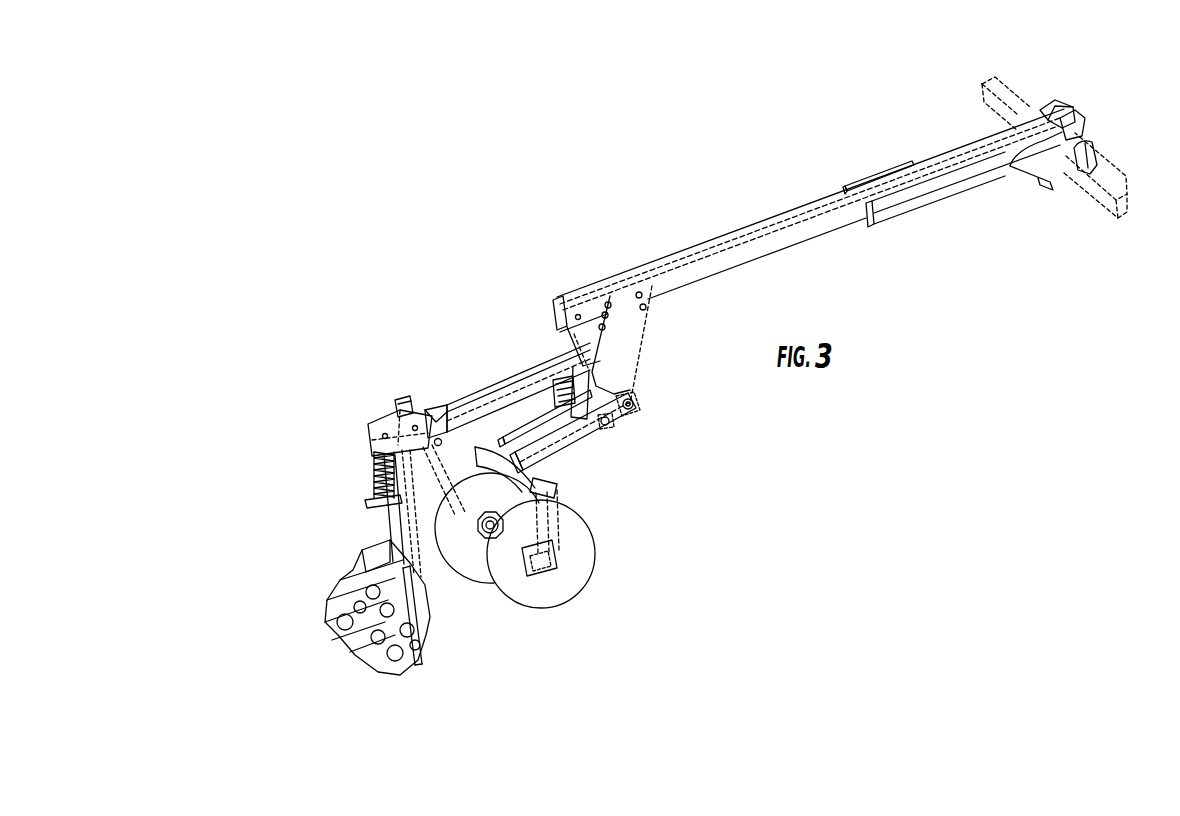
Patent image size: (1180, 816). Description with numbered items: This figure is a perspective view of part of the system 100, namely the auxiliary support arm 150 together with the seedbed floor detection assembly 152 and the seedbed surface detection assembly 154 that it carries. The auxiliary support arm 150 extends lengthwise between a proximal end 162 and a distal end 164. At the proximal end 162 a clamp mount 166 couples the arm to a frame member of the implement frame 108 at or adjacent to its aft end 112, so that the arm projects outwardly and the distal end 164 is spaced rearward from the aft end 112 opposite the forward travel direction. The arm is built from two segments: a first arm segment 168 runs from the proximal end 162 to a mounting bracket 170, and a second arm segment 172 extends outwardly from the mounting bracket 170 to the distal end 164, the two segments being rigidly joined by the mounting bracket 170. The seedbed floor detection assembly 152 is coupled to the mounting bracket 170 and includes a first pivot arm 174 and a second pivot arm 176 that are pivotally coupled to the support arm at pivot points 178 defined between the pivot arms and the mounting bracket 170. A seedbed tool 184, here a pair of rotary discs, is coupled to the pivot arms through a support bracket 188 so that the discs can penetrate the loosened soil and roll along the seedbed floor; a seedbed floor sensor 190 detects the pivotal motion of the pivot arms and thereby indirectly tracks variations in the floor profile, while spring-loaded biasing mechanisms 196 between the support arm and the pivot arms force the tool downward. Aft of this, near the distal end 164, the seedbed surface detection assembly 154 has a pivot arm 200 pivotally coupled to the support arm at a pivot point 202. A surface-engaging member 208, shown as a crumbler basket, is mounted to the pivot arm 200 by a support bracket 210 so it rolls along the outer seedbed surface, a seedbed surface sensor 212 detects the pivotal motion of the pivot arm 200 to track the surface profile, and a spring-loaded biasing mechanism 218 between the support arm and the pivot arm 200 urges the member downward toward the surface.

The system 100 is at (364, 158).
The implement frame 108 is at (1010, 83).
The aft end 112 is at (962, 70).
The auxiliary support arm 150 is at (722, 232).
The seedbed floor detection assembly 152 is at (620, 512).
The seedbed surface detection assembly 154 is at (308, 545).
The proximal end 162 is at (1060, 105).
The distal end 164 is at (372, 442).
The clamp mount 166 is at (1100, 148).
The first arm segment 168 is at (835, 226).
The mounting bracket 170 is at (622, 327).
The second arm segment 172 is at (500, 381).
The first pivot arm 174 is at (580, 447).
The second pivot arm 176 is at (528, 434).
The pivot points 178 is at (644, 406).
The seedbed tool 184 is at (529, 606).
The support bracket 188 is at (557, 484).
The seedbed floor sensor 190 is at (556, 385).
The biasing mechanisms 196 is at (610, 422).
The pivot arm 200 is at (390, 527).
The pivot point 202 is at (442, 446).
The surface-engaging member 208 is at (338, 641).
The support bracket 210 is at (421, 598).
The seedbed surface sensor 212 is at (404, 410).
The biasing mechanism 218 is at (382, 470).